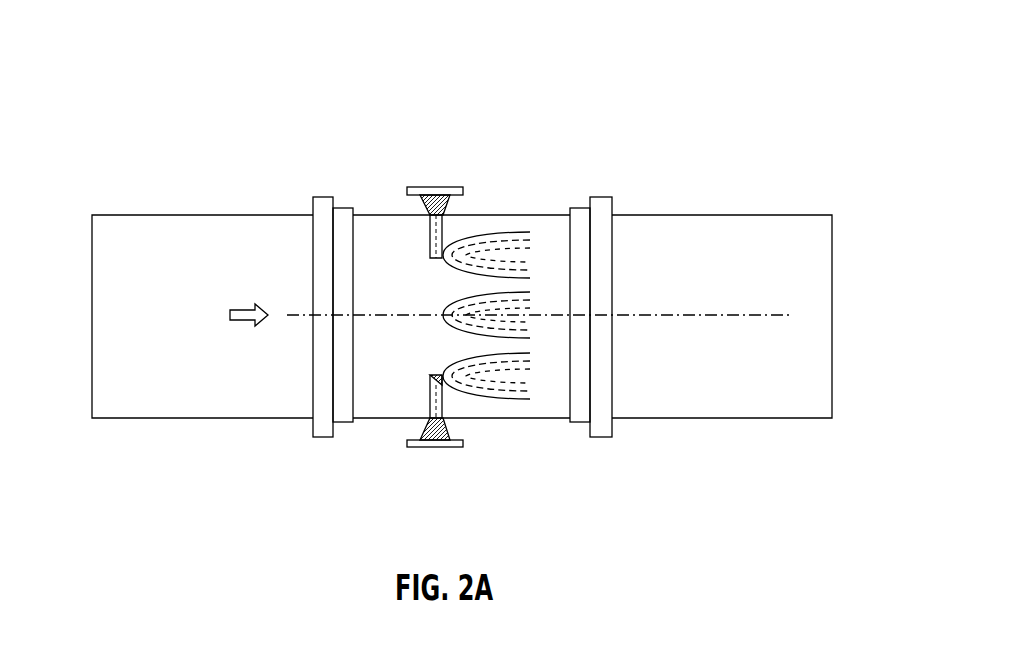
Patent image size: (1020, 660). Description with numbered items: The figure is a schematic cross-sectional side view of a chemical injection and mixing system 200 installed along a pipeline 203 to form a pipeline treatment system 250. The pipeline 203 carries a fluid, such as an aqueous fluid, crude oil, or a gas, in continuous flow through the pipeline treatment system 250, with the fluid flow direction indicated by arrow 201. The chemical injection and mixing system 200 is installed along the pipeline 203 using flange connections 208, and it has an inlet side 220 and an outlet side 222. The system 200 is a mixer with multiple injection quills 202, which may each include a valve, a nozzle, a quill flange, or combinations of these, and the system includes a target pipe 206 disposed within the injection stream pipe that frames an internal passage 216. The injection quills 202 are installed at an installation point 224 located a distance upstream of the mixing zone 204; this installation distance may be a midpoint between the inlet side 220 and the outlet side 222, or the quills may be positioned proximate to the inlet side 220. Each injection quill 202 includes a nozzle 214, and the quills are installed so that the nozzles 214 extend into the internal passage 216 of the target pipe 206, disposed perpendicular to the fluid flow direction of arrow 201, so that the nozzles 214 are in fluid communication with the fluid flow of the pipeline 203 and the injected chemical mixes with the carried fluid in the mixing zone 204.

The pipeline treatment system 250 is at (147, 105).
The chemical injection and mixing system 200 is at (630, 100).
The arrow 201 is at (245, 326).
The pipeline 203 is at (92, 282).
The inlet side 220 is at (313, 262).
The outlet side 222 is at (605, 265).
The target pipe 206 is at (542, 213).
The flange connection 208 is at (598, 200).
The installation point 224 is at (413, 188).
The injection quill 202 is at (445, 188).
The mixing zone 204 is at (482, 247).
The nozzle 214 is at (440, 377).
The internal passage 216 is at (403, 362).